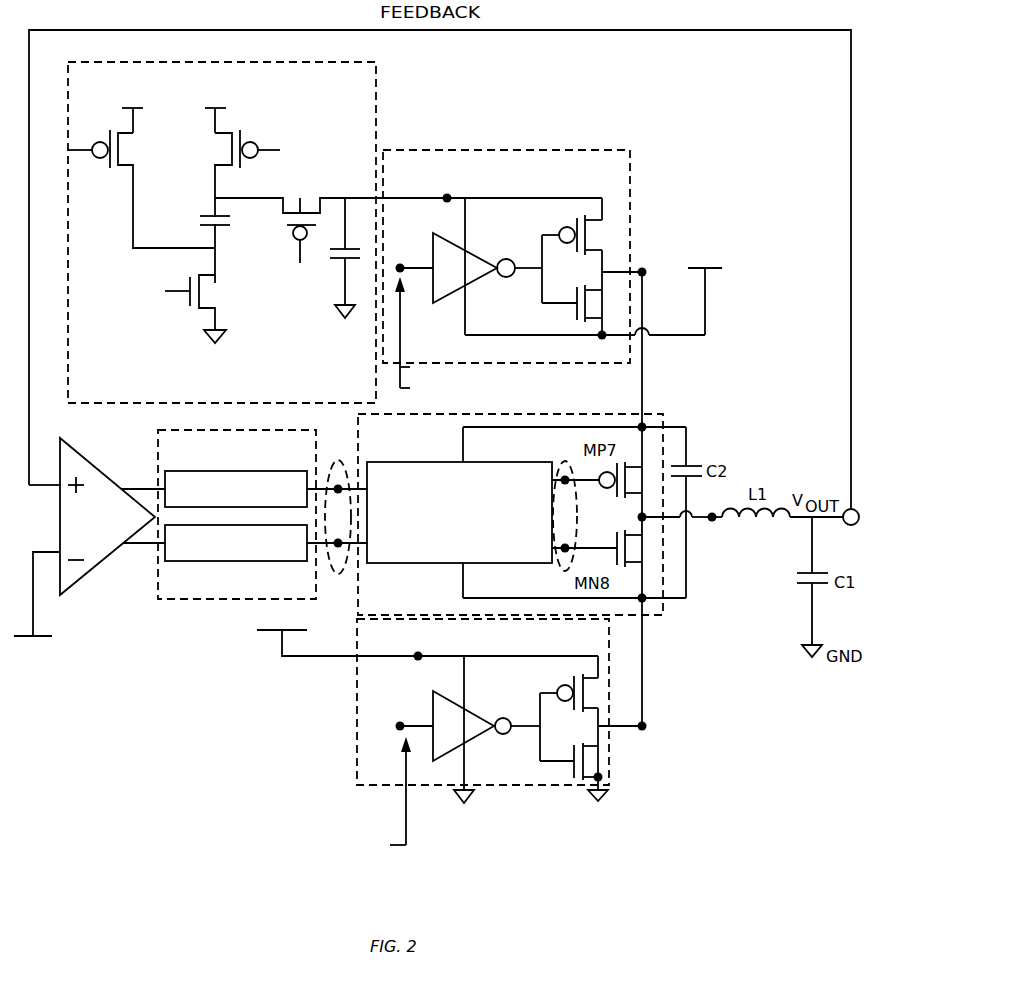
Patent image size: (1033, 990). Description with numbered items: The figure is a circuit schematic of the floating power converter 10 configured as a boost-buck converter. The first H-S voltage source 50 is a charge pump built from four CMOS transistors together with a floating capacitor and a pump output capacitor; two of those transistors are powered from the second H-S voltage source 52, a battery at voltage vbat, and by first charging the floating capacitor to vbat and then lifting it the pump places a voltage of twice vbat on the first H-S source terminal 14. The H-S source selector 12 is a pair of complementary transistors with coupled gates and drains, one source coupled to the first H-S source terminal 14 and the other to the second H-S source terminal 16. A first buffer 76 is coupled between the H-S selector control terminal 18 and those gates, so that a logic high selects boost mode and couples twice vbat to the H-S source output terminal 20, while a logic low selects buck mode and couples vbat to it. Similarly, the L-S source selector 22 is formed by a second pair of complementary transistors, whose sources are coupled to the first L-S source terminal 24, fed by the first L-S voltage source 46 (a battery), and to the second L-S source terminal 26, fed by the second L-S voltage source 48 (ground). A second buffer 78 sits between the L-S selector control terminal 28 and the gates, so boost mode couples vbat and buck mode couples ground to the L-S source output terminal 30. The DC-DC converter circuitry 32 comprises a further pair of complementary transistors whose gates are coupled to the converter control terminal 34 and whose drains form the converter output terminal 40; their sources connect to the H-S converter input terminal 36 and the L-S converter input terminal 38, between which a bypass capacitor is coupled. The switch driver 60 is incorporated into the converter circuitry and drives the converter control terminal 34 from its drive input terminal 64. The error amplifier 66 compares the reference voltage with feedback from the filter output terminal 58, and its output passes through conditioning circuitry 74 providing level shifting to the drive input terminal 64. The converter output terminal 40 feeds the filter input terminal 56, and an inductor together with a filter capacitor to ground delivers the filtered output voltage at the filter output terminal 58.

The floating power converter 10 is at (575, 116).
The high side source selector 12 is at (614, 176).
The first H-S source terminal 14 is at (449, 196).
The second H-S source terminal 16 is at (604, 337).
The H-S selector control terminal 18 is at (401, 258).
The H-S source output terminal 20 is at (644, 269).
The low side source selector 22 is at (379, 650).
The first L-S source terminal 24 is at (421, 654).
The second L-S source terminal 26 is at (604, 778).
The L-S selector control terminal 28 is at (400, 722).
The L-S source output terminal 30 is at (648, 726).
The DC-DC converter circuitry 32 is at (389, 600).
The converter control terminal 34 is at (566, 462).
The H-S converter input terminal 36 is at (645, 425).
The L-S converter input terminal 38 is at (646, 601).
The converter output terminal 40 is at (645, 520).
The first L-S voltage source 46 is at (273, 628).
The second L-S voltage source 48 is at (594, 789).
The first H-S voltage source 50 is at (359, 88).
The second H-S voltage source 52 is at (718, 266).
The filter input terminal 56 is at (712, 521).
The filter output terminal 58 is at (856, 508).
The switch driver 60 is at (469, 541).
The drive input terminal 64 is at (341, 462).
The error amplifier 66 is at (109, 522).
The conditioning circuitry 74 is at (306, 456).
The first buffer 76 is at (467, 278).
The second buffer 78 is at (466, 736).